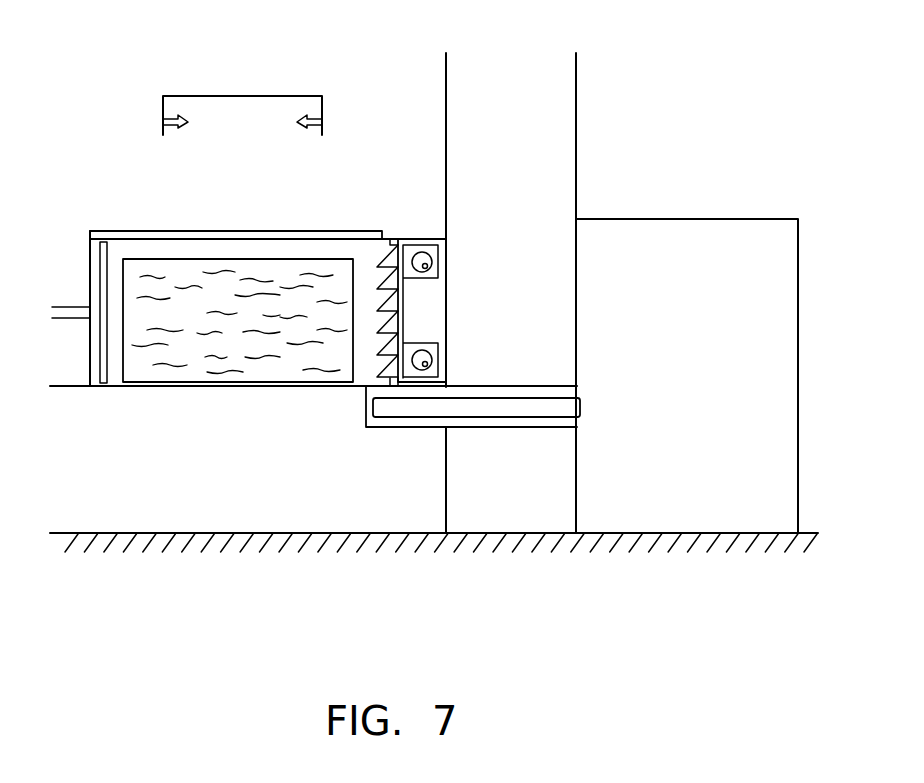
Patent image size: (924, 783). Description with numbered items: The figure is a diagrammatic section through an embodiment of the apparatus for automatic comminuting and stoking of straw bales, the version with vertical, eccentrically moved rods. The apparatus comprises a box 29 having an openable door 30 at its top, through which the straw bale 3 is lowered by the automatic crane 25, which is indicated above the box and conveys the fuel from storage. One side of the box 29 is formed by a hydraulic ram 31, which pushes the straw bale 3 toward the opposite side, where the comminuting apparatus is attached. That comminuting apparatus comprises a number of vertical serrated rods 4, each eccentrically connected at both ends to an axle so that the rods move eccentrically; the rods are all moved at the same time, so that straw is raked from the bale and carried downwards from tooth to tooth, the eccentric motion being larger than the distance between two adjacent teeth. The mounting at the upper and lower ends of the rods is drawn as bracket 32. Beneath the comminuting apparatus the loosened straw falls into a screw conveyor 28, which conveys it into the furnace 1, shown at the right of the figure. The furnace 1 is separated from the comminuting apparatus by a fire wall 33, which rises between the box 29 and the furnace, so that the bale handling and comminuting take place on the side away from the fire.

The furnace 1 is at (707, 237).
The straw bale 3 is at (277, 373).
The vertical serrated rods 4 is at (380, 267).
The automatic crane 25 is at (235, 96).
The screw conveyor 28 is at (380, 410).
The box 29 is at (128, 388).
The openable door 30 is at (247, 231).
The hydraulic ram 31 is at (102, 242).
The roller bracket 32 is at (418, 258).
The fire wall 33 is at (557, 140).